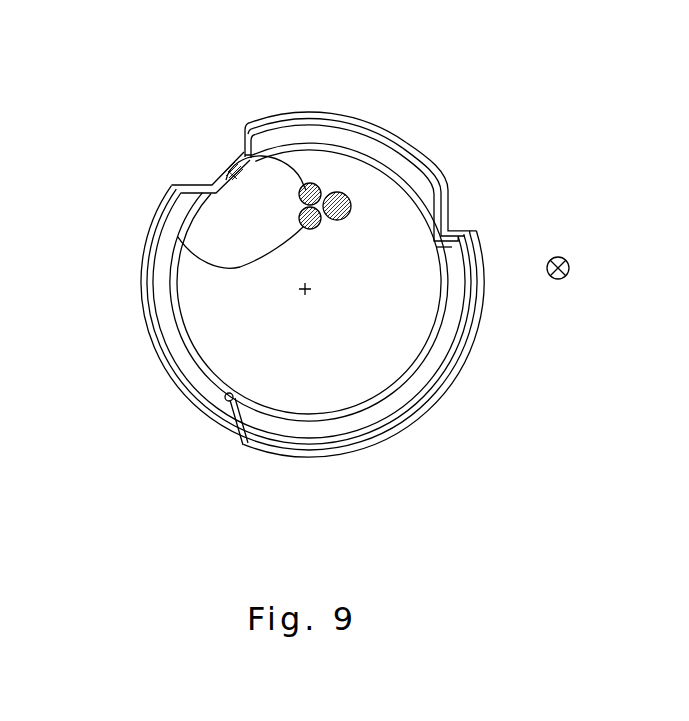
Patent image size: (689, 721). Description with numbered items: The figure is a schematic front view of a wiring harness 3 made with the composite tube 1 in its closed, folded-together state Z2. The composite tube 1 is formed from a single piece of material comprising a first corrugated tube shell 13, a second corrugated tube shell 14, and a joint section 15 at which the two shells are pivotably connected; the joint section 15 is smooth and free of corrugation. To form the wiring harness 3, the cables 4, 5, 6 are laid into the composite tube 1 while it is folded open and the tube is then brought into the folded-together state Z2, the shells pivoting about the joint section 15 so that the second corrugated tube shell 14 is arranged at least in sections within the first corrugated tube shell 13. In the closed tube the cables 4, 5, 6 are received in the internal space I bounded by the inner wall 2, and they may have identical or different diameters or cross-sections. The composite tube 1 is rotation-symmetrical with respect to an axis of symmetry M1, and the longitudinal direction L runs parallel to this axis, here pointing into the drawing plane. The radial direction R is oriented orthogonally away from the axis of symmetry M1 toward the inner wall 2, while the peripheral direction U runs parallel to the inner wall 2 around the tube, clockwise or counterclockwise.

The composite tube 1 is at (270, 290).
The inner wall 2 is at (289, 292).
The wiring harness 3 is at (360, 136).
The cable 4 is at (183, 134).
The cable 5 is at (250, 266).
The cable 6 is at (352, 196).
The first corrugated tube shell 13 is at (270, 353).
The second corrugated tube shell 14 is at (343, 110).
The joint section 15 is at (226, 166).
The axis of symmetry M1 is at (220, 381).
The folded-together state Z2 is at (372, 471).
The radial direction R is at (387, 336).
The peripheral direction U is at (376, 384).
The internal space I is at (411, 278).
The longitudinal direction L is at (569, 277).